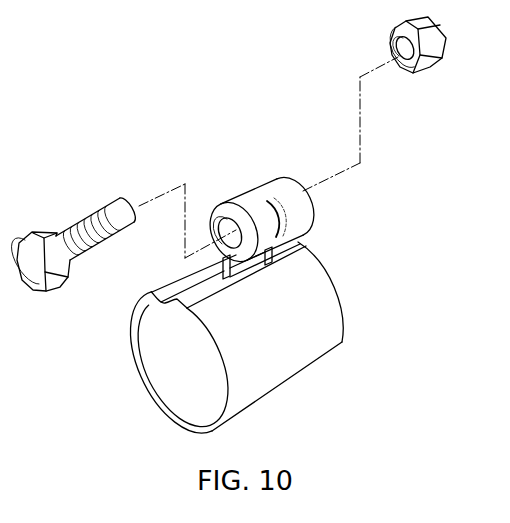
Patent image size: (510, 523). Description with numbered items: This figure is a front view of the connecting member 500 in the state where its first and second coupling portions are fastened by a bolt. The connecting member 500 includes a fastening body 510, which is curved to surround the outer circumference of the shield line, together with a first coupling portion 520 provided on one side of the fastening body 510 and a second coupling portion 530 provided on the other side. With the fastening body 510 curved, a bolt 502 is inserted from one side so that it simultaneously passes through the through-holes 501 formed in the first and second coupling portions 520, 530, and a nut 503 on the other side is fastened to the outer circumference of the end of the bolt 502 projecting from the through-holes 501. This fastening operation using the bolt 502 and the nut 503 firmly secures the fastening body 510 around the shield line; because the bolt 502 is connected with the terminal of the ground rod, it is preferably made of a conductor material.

The connecting member 500 is at (130, 63).
The through-holes 501 is at (184, 256).
The bolt 502 is at (40, 237).
The nut 503 is at (437, 63).
The fastening body 510 is at (290, 357).
The first coupling portion 520 is at (267, 188).
The second coupling portion 530 is at (249, 207).